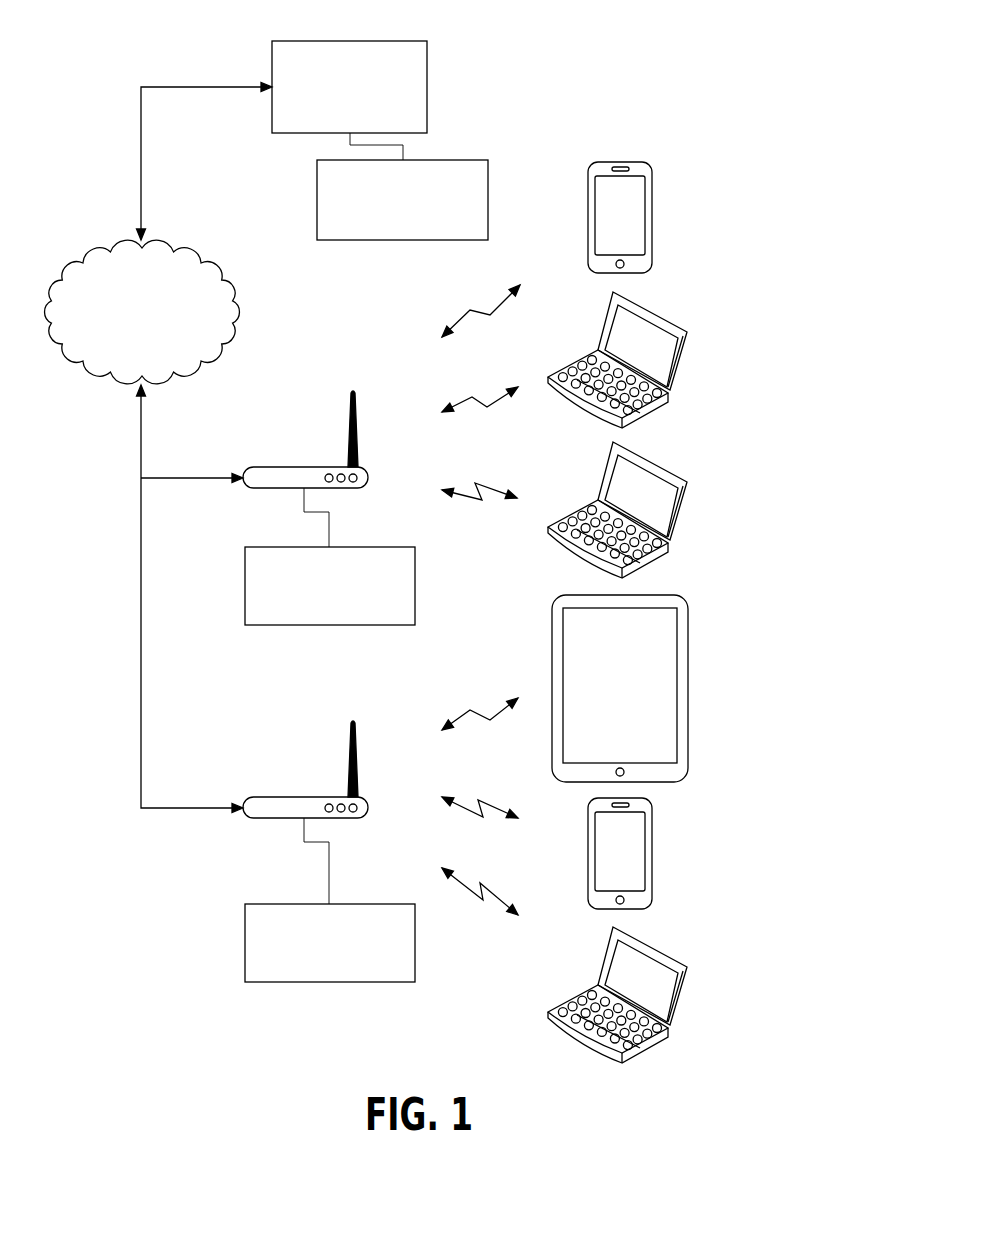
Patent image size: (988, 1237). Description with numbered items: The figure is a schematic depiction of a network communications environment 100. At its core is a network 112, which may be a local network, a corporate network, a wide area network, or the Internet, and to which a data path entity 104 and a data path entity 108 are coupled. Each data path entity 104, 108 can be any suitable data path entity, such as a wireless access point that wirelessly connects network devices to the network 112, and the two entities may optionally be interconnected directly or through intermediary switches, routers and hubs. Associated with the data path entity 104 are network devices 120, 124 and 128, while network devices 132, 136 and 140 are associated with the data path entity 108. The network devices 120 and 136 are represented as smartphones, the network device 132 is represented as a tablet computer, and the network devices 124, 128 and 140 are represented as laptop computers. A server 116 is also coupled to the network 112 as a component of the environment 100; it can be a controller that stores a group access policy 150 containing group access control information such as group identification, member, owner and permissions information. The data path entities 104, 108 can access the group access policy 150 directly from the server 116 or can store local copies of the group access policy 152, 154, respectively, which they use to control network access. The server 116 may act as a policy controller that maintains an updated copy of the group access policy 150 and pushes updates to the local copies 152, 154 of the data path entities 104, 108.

The network communications environment 100 is at (740, 72).
The data path entity 104 is at (272, 465).
The data path entity 108 is at (272, 795).
The network 112 is at (142, 312).
The server 116 is at (349, 87).
The network device 120 is at (653, 213).
The network device 124 is at (690, 333).
The network device 128 is at (692, 485).
The network device 132 is at (688, 668).
The network device 136 is at (653, 858).
The network device 140 is at (692, 968).
The group access policy 150 is at (389, 233).
The group access policy 152 is at (316, 620).
The group access policy 154 is at (316, 978).